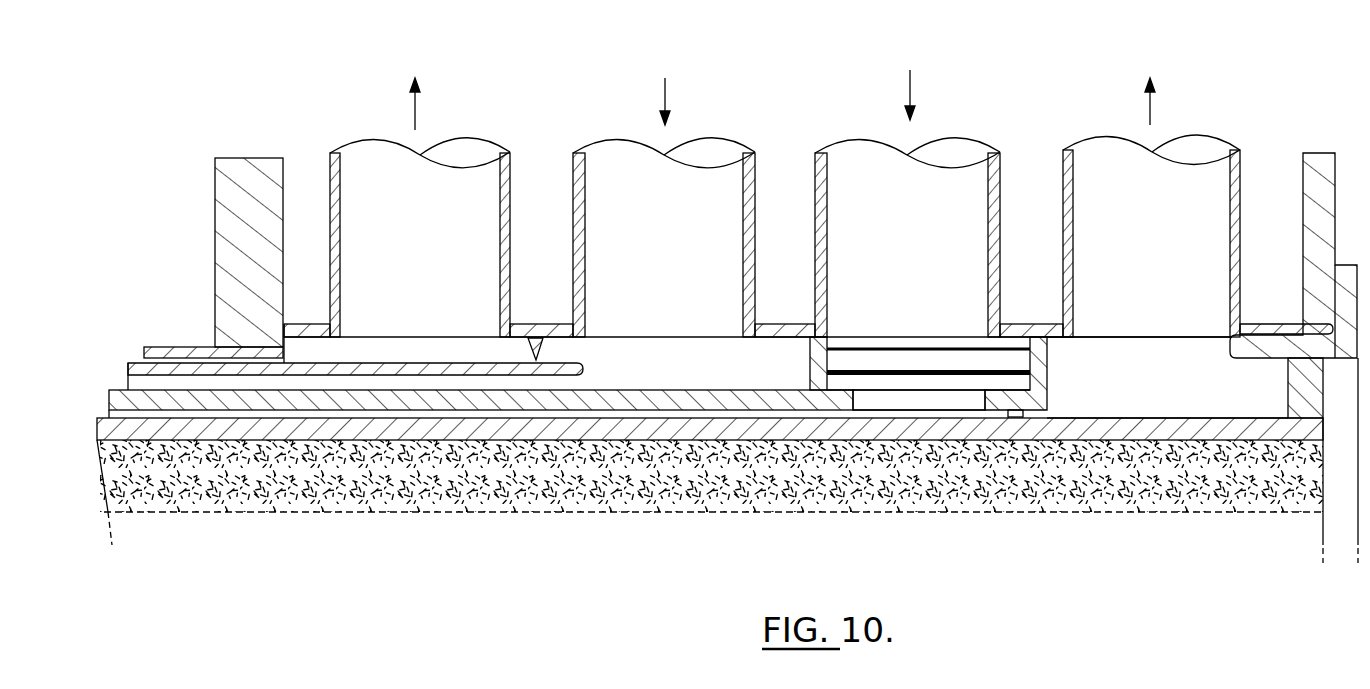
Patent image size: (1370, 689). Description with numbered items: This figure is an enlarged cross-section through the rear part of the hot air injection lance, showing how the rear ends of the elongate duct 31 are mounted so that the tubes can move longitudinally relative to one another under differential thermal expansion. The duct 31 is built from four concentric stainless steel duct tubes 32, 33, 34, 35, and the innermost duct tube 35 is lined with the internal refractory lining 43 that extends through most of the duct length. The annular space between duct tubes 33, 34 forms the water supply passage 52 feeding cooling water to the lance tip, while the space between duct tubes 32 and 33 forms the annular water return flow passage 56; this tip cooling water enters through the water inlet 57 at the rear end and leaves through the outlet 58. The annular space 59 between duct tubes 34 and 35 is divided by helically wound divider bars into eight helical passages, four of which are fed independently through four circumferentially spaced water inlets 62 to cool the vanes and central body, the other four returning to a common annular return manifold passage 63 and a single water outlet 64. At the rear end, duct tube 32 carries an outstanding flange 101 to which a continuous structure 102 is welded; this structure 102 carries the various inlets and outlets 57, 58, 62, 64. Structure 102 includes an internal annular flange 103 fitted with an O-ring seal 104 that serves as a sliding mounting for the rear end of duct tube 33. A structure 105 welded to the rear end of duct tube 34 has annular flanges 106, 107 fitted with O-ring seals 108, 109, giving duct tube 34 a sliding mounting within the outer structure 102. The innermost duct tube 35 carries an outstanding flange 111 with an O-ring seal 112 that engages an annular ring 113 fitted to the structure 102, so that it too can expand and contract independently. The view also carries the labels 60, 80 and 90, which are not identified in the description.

The elongate duct 31 is at (181, 336).
The duct tube 32 is at (160, 356).
The duct tube 33 is at (233, 375).
The duct tube 34 is at (333, 393).
The innermost duct tube 35 is at (397, 424).
The internal refractory lining 43 is at (617, 477).
The water supply passage 52 is at (278, 383).
The annular water return flow passage 56 is at (193, 358).
The water inlet 57 is at (604, 165).
The outlet 58 is at (456, 185).
The annular space 59 is at (363, 416).
The separating layer 60 is at (742, 413).
The water inlets 62 is at (957, 400).
The annular return manifold passage 63 is at (1182, 403).
The water outlet 64 is at (1090, 165).
The tube 80 is at (853, 170).
The lower plate 90 is at (868, 380).
The outstanding flange 101 is at (240, 170).
The continuous structure 102 is at (1293, 146).
The internal annular flange 103 is at (538, 336).
The O-ring seal 104 is at (535, 362).
The structure 105 is at (1058, 385).
The annular flange 106 is at (808, 363).
The annular flange 107 is at (1048, 356).
The O-ring seal 108 is at (802, 337).
The O-ring seal 109 is at (1036, 322).
The outstanding flange 111 is at (1300, 382).
The O-ring seal 112 is at (1300, 356).
The annular ring 113 is at (1204, 350).